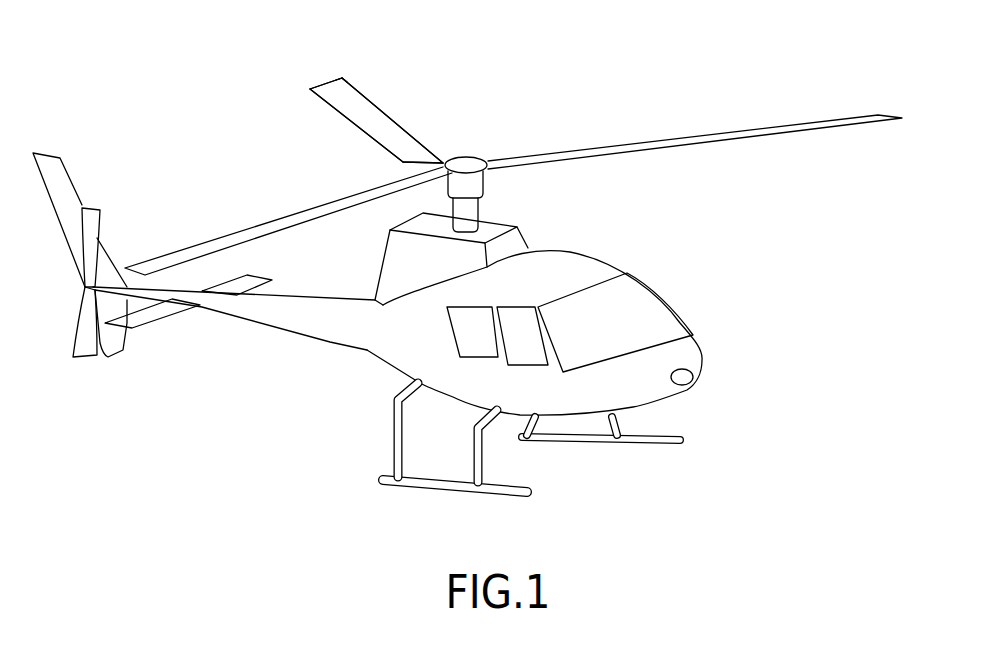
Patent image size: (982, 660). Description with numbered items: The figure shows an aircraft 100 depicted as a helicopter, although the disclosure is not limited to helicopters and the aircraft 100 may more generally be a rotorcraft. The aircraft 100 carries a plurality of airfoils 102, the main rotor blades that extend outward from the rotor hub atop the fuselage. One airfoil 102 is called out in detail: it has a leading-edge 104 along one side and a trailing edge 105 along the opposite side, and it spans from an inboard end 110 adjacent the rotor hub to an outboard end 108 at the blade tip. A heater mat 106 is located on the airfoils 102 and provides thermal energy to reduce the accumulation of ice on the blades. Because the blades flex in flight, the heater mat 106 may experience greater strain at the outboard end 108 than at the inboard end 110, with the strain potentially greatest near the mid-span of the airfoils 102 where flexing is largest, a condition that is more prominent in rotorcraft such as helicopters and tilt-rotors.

The aircraft 100 is at (110, 98).
The airfoils 102 is at (407, 125).
The leading-edge 104 is at (351, 85).
The trailing edge 105 is at (330, 106).
The heater mat 106 is at (342, 78).
The outboard end 108 is at (317, 84).
The inboard end 110 is at (437, 163).